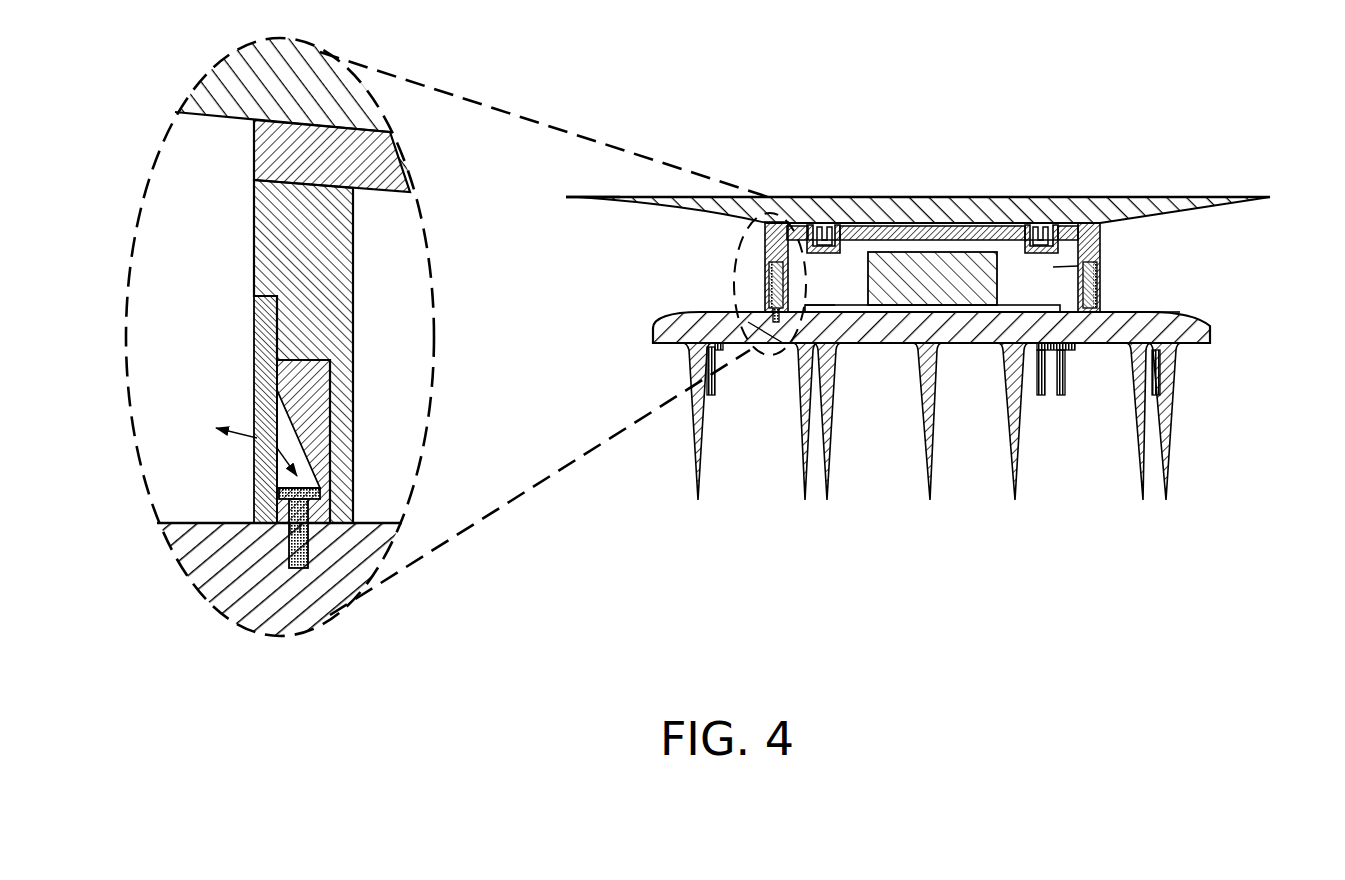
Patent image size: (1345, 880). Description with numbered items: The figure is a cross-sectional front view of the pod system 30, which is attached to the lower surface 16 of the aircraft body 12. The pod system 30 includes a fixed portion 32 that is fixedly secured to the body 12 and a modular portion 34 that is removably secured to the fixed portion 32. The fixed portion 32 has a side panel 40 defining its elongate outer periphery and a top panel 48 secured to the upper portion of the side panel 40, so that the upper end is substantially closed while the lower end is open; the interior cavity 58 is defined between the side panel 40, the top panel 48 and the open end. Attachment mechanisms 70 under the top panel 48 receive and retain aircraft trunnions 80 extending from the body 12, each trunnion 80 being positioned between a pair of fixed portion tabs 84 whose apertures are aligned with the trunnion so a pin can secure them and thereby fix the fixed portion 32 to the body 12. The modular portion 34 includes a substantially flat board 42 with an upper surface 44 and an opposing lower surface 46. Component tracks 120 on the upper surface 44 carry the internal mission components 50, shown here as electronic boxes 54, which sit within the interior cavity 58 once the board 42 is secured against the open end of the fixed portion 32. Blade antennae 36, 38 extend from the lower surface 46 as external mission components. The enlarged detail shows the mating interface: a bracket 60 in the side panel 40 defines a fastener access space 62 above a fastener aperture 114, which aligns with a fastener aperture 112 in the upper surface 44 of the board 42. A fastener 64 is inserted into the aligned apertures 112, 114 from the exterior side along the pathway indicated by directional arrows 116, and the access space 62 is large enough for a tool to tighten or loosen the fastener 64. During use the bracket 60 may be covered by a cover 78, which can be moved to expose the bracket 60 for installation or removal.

The aircraft body 12 is at (630, 201).
The lower surface 16 is at (693, 210).
The pod system 30 is at (1208, 306).
The fixed portion 32 is at (1108, 242).
The modular portion 34 is at (1220, 348).
The blade antennae 36 is at (1174, 438).
The blade antennae 38 is at (1065, 380).
The side panel 40 is at (340, 311).
The board 42 is at (1212, 326).
The upper surface 44 is at (158, 522).
The lower surface 46 is at (990, 343).
The top panel 48 is at (935, 228).
The internal mission components 50 is at (1018, 285).
The electronic boxes 54 is at (920, 262).
The interior cavity 58 is at (1053, 267).
The bracket 60 is at (268, 370).
The fastener access space 62 is at (275, 418).
The fastener 64 is at (277, 500).
The attachment mechanism 70 is at (823, 218).
The cover 78 is at (253, 300).
The aircraft trunnion 80 is at (850, 230).
The fixed portion tabs 84 is at (815, 226).
The fastener apertures 112 is at (289, 536).
The fastener aperture 114 is at (288, 533).
The directional arrows 116 is at (278, 448).
The component tracks 120 is at (833, 305).